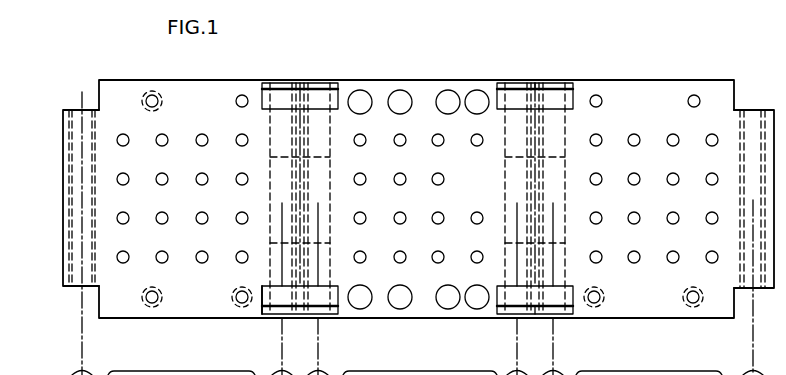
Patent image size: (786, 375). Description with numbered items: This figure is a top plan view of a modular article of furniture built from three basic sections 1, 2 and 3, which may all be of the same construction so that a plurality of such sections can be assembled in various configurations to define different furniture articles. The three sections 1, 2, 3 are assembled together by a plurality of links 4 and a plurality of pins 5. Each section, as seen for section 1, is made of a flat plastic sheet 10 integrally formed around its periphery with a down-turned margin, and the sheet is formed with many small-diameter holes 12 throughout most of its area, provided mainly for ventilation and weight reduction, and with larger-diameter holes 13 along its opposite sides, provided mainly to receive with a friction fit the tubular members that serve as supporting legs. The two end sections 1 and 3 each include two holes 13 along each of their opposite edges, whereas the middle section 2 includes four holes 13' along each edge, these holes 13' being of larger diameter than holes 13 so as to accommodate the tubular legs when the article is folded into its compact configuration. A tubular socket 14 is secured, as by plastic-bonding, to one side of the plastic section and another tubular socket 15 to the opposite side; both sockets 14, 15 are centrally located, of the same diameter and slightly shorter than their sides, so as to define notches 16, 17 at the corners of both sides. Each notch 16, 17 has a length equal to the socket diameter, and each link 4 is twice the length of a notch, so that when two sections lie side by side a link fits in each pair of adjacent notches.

The section 1 is at (143, 89).
The section 2 is at (416, 90).
The section 3 is at (654, 85).
The link 4 is at (342, 96).
The pin 5 is at (570, 66).
The flat plastic sheet 10 is at (192, 373).
The small-diameter hole 12 is at (124, 263).
The larger-diameter hole 13 is at (422, 217).
The larger-diameter hole of middle section 13' is at (424, 195).
The tubular socket 14 is at (65, 271).
The tubular socket 15 is at (268, 268).
The notch 16 is at (78, 110).
The notch 17 is at (264, 104).